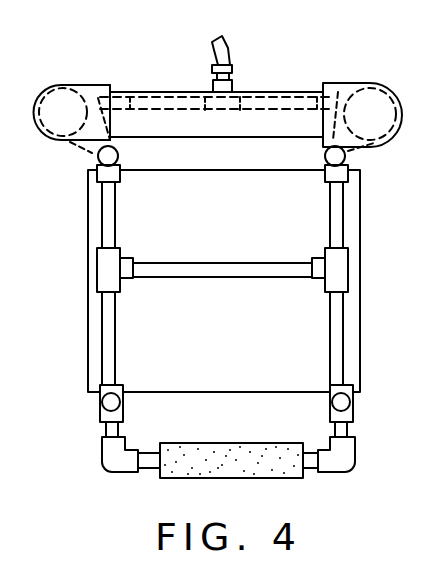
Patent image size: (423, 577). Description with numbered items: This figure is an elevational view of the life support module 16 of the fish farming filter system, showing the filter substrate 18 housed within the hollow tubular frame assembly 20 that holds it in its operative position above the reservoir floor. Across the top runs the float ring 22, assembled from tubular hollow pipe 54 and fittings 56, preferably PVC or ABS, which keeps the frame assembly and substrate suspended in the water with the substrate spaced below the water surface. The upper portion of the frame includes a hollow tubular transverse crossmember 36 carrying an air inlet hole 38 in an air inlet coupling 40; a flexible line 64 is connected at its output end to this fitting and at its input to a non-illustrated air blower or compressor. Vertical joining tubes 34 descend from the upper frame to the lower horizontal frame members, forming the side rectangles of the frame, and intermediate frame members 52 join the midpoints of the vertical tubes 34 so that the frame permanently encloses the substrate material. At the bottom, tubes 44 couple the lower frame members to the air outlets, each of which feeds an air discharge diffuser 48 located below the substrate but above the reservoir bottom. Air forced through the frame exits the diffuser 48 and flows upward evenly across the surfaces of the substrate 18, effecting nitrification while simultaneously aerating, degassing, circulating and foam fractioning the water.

The life support module 16 is at (334, 82).
The filter substrate 18 is at (88, 203).
The hollow tubular frame assembly 20 is at (366, 360).
The float ring 22 is at (287, 86).
The vertical joining tubes 34 is at (107, 237).
The hollow tubular transverse crossmember 36 is at (145, 103).
The air inlet hole 38 is at (232, 76).
The air inlet coupling 40 is at (238, 102).
The tubes 44 is at (107, 429).
The air discharge diffuser 48 is at (228, 480).
The intermediate frame members 52 is at (268, 278).
The tubular hollow pipe 54 is at (177, 92).
The fittings 56 is at (67, 97).
The flexible line 64 is at (224, 42).